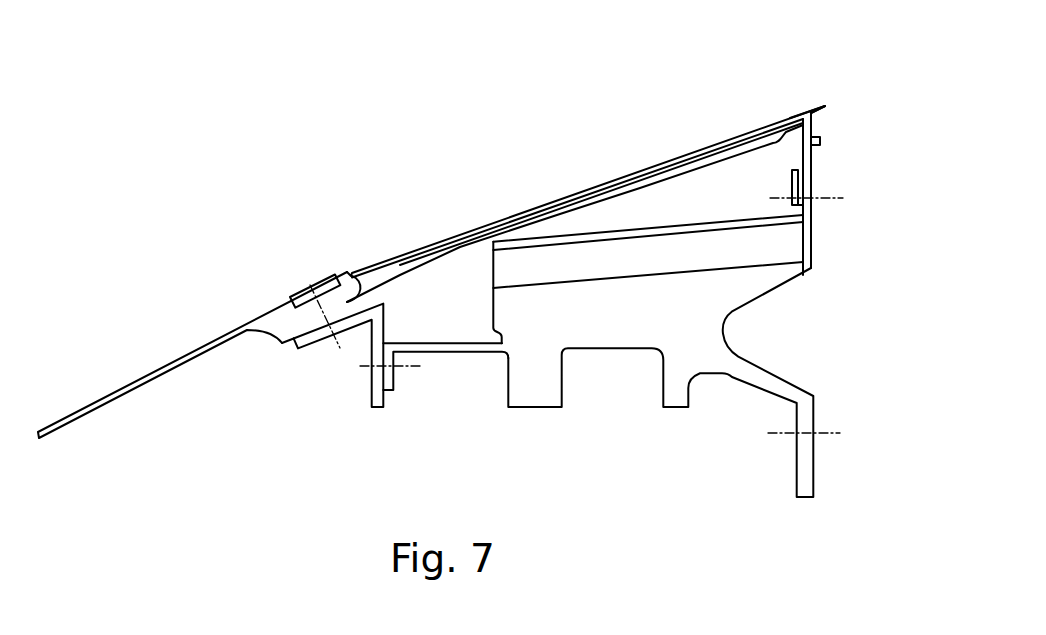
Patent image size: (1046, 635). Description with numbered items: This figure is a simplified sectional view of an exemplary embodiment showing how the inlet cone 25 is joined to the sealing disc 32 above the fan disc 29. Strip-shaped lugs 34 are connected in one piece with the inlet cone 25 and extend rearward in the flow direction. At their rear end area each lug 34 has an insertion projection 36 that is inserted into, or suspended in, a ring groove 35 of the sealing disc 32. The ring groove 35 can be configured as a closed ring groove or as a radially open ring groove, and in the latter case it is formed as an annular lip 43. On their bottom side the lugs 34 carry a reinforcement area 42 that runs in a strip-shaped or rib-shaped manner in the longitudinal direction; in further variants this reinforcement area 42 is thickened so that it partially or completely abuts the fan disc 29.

The inlet cone 25 is at (160, 367).
The fan disc 29 is at (610, 332).
The sealing disc 32 is at (812, 232).
The strip-shaped lug 34 is at (444, 246).
The ring groove 35 is at (820, 113).
The insertion projection 36 is at (820, 142).
The reinforcement area 42 is at (673, 176).
The annular lip 43 is at (797, 121).